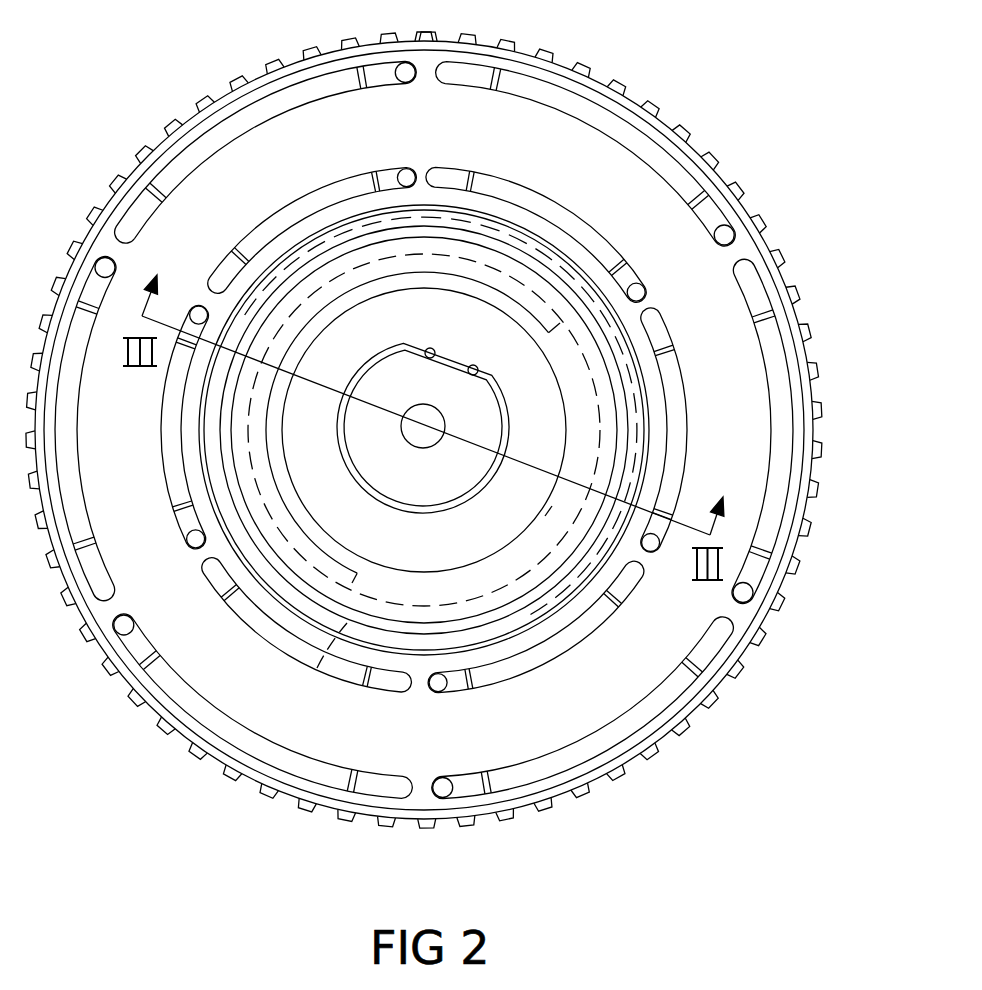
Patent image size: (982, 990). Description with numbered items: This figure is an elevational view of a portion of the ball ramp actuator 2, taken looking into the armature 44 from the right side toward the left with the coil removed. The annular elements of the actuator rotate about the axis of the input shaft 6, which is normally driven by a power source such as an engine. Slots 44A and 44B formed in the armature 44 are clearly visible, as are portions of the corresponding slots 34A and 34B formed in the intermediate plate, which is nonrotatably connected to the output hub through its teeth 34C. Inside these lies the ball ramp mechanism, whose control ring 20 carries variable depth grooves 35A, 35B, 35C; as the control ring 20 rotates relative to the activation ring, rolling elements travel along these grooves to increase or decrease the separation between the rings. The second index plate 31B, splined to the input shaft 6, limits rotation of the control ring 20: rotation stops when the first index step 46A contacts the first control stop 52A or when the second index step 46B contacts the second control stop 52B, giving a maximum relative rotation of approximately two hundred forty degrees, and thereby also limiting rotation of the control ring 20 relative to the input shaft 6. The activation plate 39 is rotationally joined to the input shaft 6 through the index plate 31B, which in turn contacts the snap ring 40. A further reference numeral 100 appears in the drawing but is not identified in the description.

The ball ramp actuator 2 is at (607, 826).
The input shaft 6 is at (394, 396).
The control ring 20 is at (611, 413).
The second index plate 31B is at (556, 449).
The slot 34A is at (680, 160).
The slot 34B is at (634, 259).
The teeth 34C is at (715, 163).
The variable depth groove 35A is at (262, 232).
The variable depth groove 35B is at (566, 341).
The variable depth groove 35C is at (320, 668).
The activation plate 39 is at (540, 92).
The snap ring 40 is at (470, 366).
The armature 44 is at (720, 315).
The slot 44A is at (610, 98).
The slot 44B is at (618, 238).
The first index step 46A is at (378, 568).
The second index step 46B is at (530, 521).
The first control stop 52A is at (660, 352).
The second control stop 52B is at (558, 510).
The hub 100 is at (410, 445).